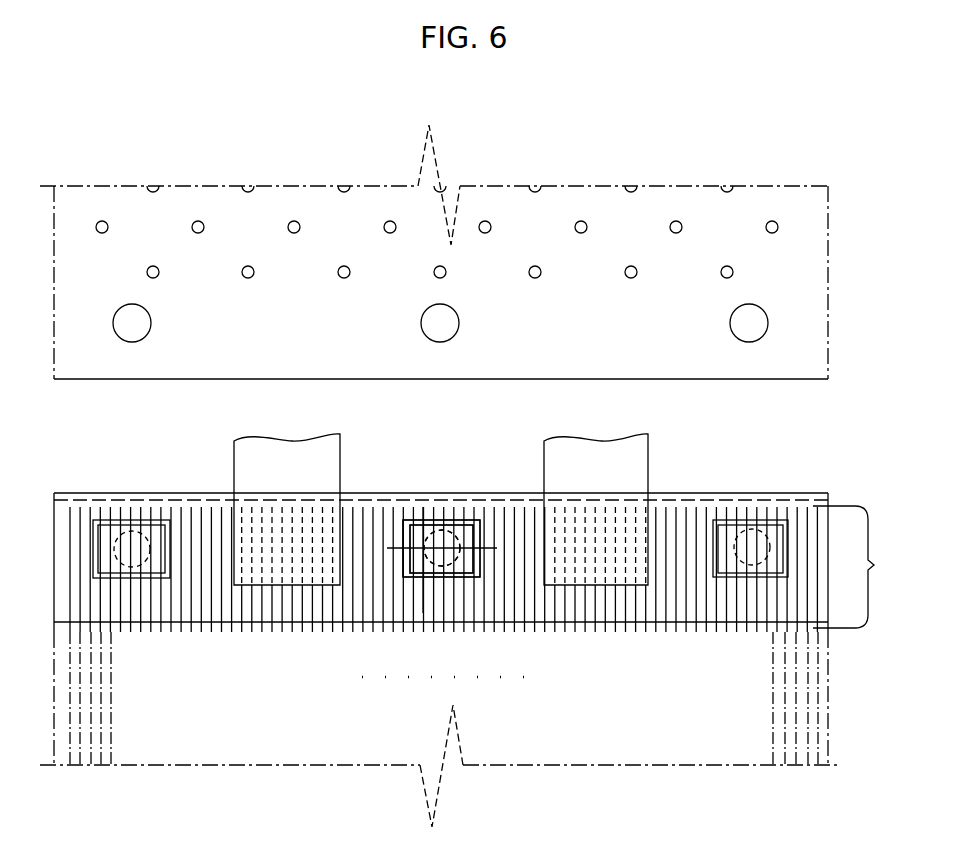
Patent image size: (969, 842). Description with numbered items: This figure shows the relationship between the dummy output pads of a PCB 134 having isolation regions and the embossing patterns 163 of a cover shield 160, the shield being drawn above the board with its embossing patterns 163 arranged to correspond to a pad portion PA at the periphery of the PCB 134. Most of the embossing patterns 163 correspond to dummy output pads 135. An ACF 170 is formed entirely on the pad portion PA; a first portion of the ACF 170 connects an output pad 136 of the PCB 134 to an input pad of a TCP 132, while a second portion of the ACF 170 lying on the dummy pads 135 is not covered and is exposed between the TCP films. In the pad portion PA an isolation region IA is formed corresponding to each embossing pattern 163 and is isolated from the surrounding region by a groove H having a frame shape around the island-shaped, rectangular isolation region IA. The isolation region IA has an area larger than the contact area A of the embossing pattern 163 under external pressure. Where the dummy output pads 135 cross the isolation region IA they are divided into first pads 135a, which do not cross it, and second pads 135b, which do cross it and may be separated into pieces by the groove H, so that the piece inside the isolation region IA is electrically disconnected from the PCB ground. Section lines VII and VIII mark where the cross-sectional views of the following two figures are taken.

The mask plate 160 is at (661, 166).
The embossing pattern 163 is at (421, 323).
The TCP 132 is at (650, 463).
The PCB 134 is at (795, 496).
The dummy output pad 135 is at (521, 462).
The first pad 135a is at (490, 522).
The second pad 135b is at (462, 527).
The output pad 136 is at (590, 515).
The ACF 170 is at (712, 500).
The groove H is at (137, 514).
The isolation region IA is at (107, 527).
The contact area A is at (437, 531).
The pad portion PA is at (859, 567).
The line VII- VII is at (430, 603).
The line VIII- VIII is at (497, 556).